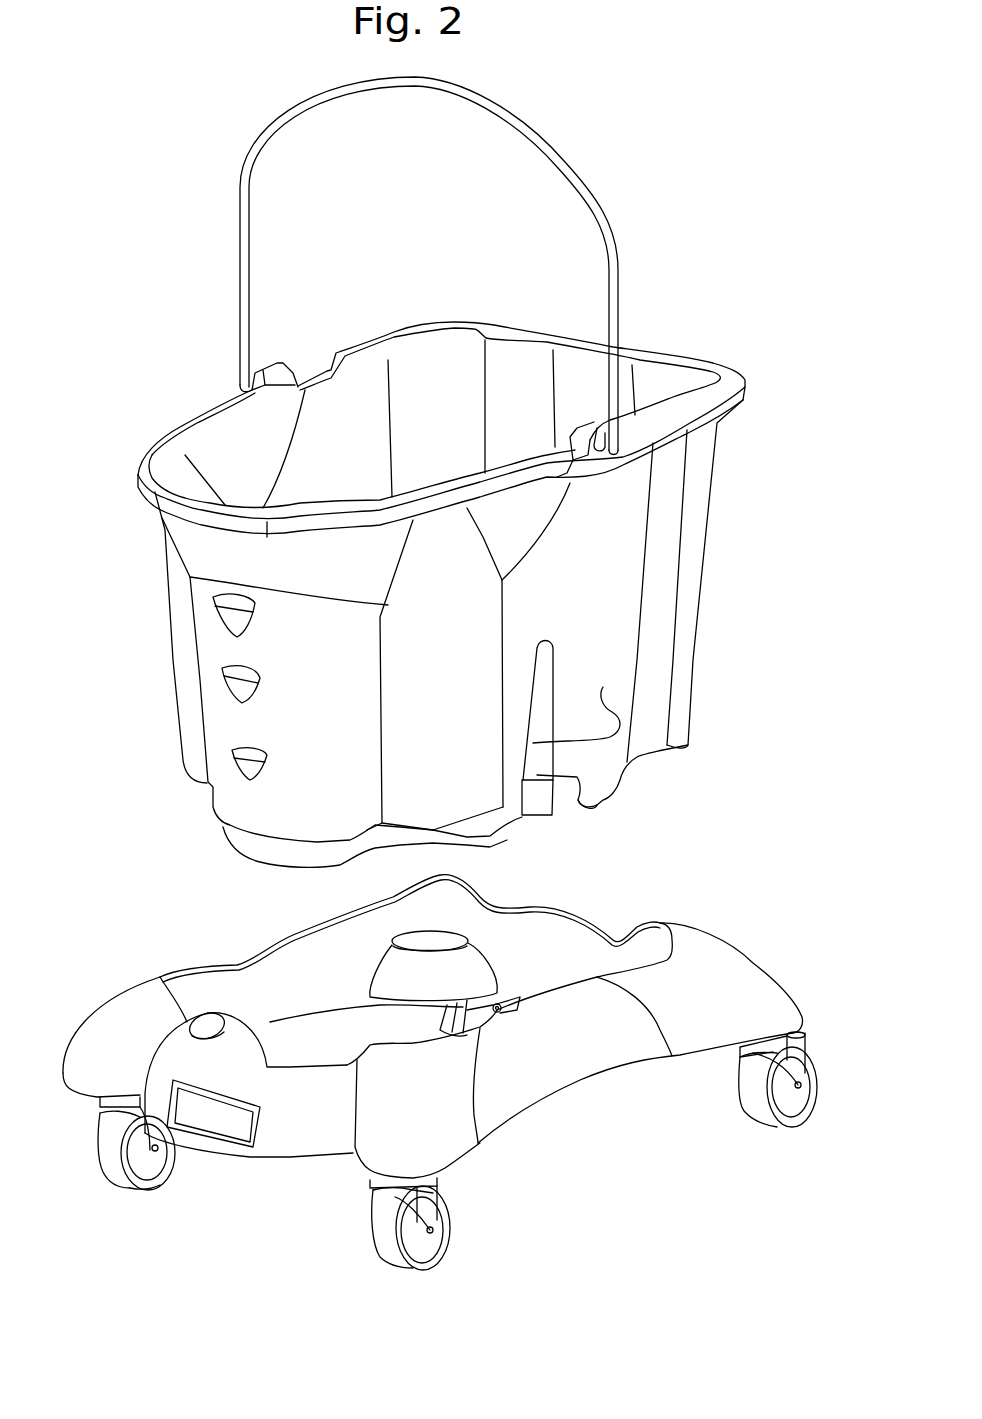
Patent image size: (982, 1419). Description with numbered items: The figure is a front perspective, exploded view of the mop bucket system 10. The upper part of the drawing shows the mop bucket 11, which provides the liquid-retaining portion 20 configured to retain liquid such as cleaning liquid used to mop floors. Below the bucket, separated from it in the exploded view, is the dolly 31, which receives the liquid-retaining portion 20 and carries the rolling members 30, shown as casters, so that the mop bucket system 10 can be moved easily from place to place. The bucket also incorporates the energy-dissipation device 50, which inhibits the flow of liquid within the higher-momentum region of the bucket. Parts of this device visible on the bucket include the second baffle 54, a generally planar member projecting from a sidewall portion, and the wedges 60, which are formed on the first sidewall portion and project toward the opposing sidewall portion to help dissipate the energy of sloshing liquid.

The mop bucket system 10 is at (800, 456).
The mop bucket 11 is at (705, 548).
The liquid-retaining portion 20 is at (688, 612).
The rolling members 30 is at (122, 1172).
The dolly 31 is at (580, 1070).
The energy-dissipation device 50 is at (247, 595).
The second baffle 54 is at (603, 687).
The wedges 60 is at (268, 621).